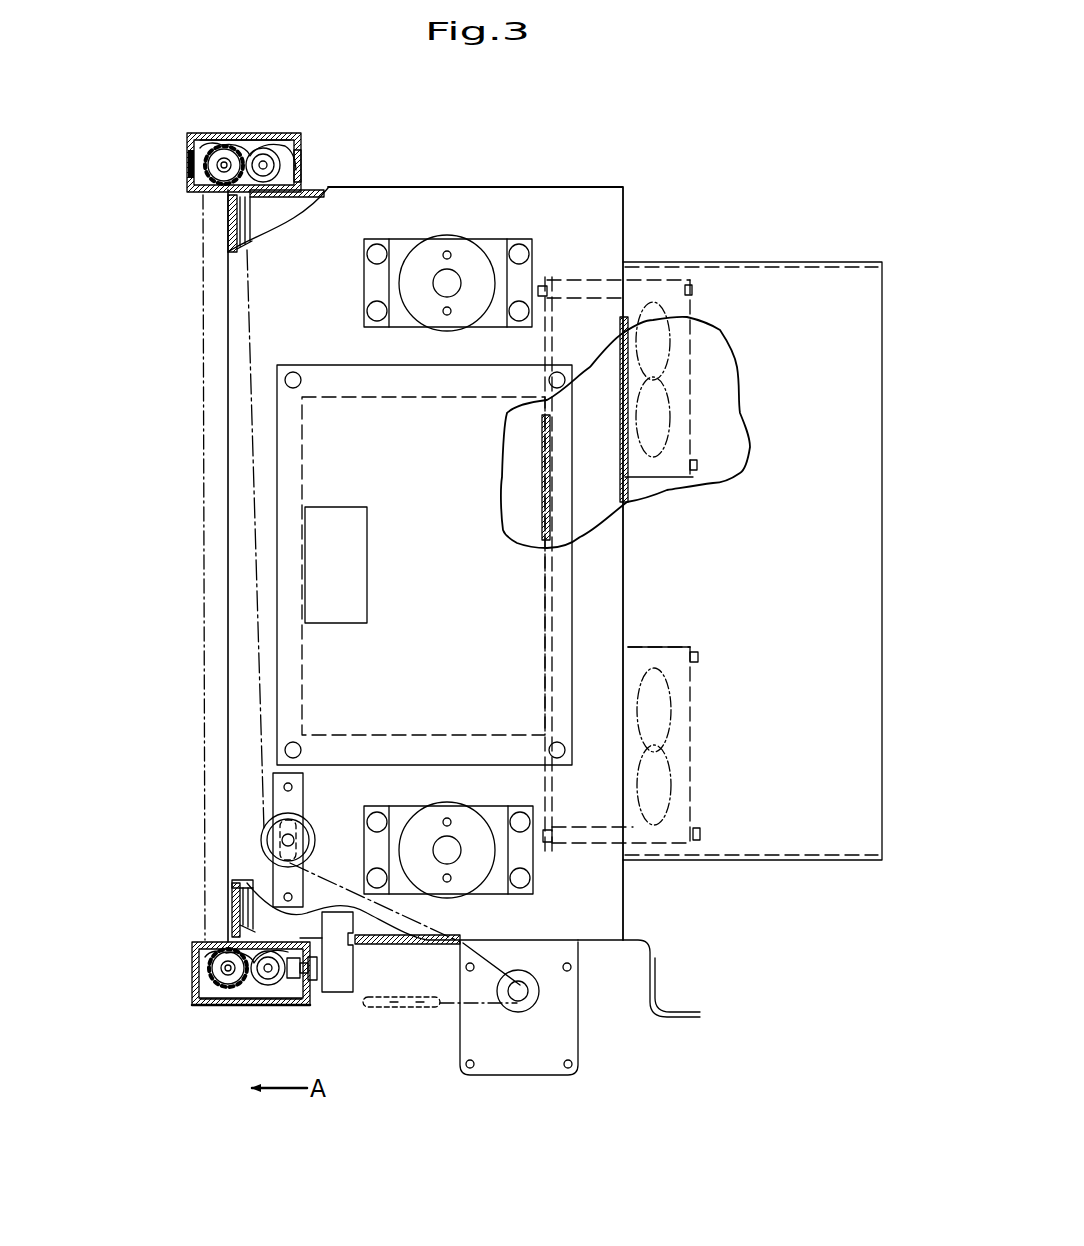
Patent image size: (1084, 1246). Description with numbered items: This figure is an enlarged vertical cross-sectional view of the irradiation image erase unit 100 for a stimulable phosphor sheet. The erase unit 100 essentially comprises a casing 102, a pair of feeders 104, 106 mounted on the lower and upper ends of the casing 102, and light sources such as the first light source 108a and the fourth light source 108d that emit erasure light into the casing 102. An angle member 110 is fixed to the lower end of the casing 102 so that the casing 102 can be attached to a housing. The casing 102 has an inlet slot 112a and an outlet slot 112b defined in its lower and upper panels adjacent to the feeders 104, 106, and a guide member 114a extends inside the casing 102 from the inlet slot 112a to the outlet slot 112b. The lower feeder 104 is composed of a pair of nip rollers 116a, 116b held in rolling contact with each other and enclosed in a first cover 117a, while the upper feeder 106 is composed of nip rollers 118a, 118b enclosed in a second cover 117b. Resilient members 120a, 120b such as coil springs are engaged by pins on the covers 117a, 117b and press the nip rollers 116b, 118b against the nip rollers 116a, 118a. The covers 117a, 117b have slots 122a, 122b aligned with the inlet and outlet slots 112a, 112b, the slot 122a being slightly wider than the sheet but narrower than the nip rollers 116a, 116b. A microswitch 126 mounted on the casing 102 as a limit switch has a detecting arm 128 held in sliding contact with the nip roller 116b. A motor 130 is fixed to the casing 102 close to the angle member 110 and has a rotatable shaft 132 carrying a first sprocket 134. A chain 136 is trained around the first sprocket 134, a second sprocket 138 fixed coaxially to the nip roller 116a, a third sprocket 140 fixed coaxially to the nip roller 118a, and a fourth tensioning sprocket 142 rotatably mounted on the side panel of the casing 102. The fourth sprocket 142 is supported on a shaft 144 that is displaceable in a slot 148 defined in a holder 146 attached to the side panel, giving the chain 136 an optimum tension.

The irradiation image erase unit 100 is at (630, 458).
The casing 102 is at (628, 219).
The feeder 104 is at (240, 1004).
The feeder 106 is at (254, 121).
The first light source 108a is at (452, 237).
The fourth light source 108d is at (486, 899).
The angle member 110 is at (680, 1010).
The inlet slot 112a is at (232, 926).
The outlet slot 112b is at (232, 206).
The guide member 114a is at (238, 893).
The nip roller 116a is at (228, 984).
The nip roller 116b is at (272, 982).
The first cover 117a is at (300, 982).
The second cover 117b is at (304, 182).
The nip roller 118a is at (216, 146).
The nip roller 118b is at (282, 157).
The resilient member 120a is at (198, 960).
The resilient member 120b is at (190, 150).
The slot 122a is at (249, 1006).
The slot 122b is at (240, 134).
The microswitch 126 is at (350, 979).
The detecting arm 128 is at (308, 988).
The motor 130 is at (525, 1076).
The rotatable shaft 132 is at (528, 991).
The first sprocket 134 is at (505, 1011).
The chain 136 is at (255, 501).
The second sprocket 138 is at (193, 1006).
The third sprocket 140 is at (186, 161).
The fourth tensioning sprocket 142 is at (303, 832).
The shaft 144 is at (285, 840).
The holder 146 is at (300, 776).
The slot 148 is at (304, 813).